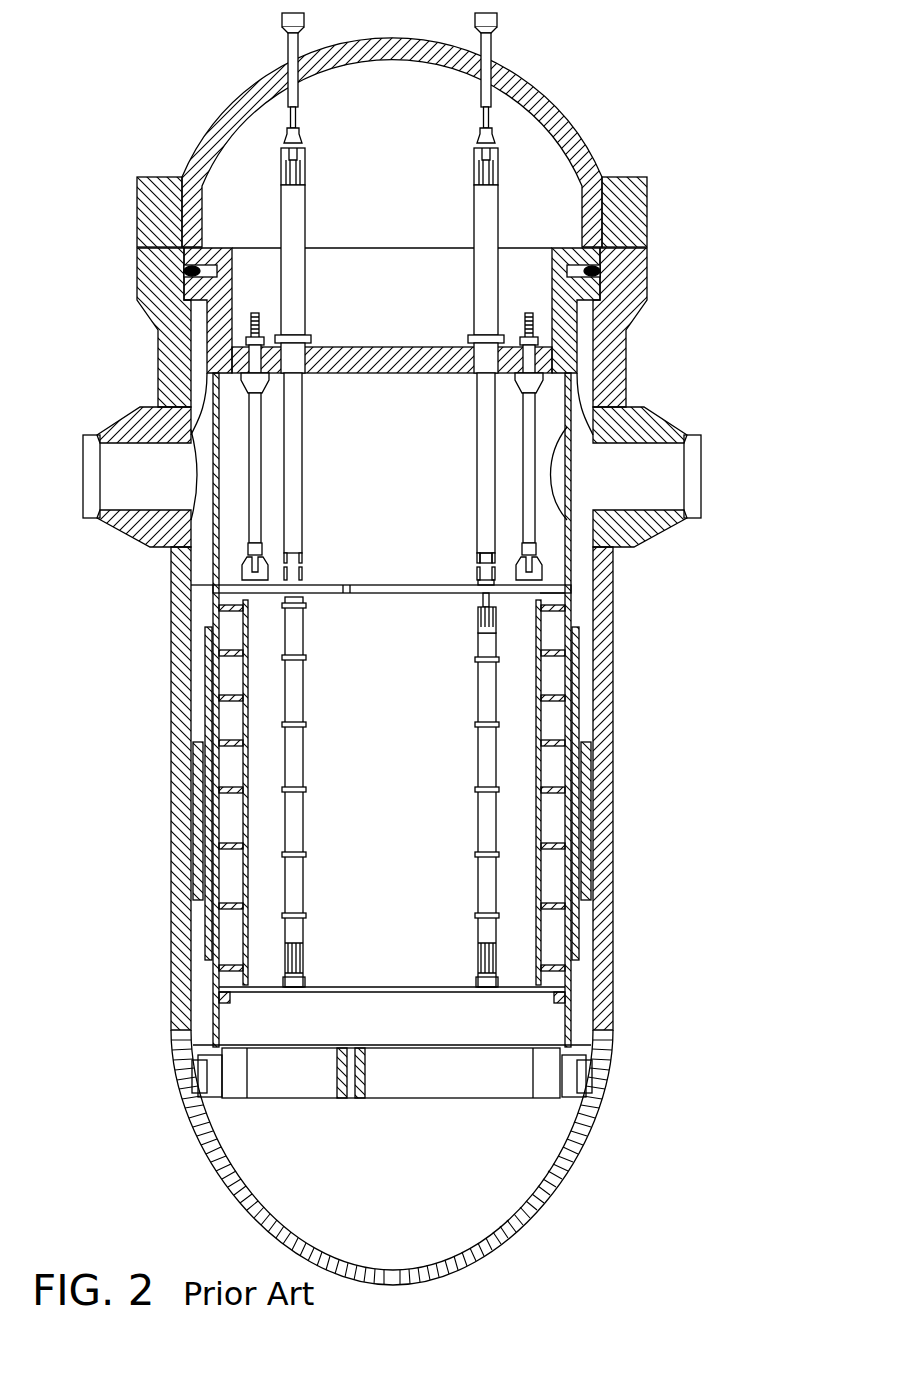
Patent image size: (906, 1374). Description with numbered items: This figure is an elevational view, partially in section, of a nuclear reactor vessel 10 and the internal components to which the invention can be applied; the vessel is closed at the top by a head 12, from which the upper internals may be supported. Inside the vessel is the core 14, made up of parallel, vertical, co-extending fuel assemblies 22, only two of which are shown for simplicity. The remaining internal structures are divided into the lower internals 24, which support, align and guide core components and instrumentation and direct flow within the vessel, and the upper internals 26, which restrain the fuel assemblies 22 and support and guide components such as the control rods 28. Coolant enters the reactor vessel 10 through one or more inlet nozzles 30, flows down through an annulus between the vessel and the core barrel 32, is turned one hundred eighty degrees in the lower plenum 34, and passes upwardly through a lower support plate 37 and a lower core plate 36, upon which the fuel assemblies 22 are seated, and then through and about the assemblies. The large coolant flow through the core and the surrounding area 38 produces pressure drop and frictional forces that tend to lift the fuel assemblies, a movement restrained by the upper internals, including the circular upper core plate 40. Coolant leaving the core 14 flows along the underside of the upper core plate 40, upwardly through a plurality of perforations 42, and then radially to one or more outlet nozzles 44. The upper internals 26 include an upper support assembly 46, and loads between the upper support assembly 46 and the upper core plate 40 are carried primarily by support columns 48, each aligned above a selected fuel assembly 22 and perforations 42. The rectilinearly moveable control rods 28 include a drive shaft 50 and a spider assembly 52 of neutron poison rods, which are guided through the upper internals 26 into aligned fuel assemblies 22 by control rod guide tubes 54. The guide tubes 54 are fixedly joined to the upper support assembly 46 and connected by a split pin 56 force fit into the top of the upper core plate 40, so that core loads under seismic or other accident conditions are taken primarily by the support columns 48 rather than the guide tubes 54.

The reactor vessel 10 is at (613, 663).
The closure head 12 is at (640, 212).
The core 14 is at (377, 784).
The fuel assemblies 22 is at (307, 690).
The lower internals 24 is at (377, 1034).
The upper internals 26 is at (379, 454).
The control rods 28 is at (473, 562).
The inlet nozzles 30 is at (120, 410).
The core barrel 32 is at (191, 585).
The lower plenum 34 is at (556, 1153).
The lower core plate 36 is at (455, 985).
The lower support plate 37 is at (432, 1087).
The surrounding area 38 is at (447, 762).
The upper core plate 40 is at (435, 593).
The perforations 42 is at (350, 582).
The outlet nozzles 44 is at (640, 410).
The upper support assembly 46 is at (560, 250).
The support columns 48 is at (520, 425).
The drive shaft 50 is at (497, 560).
The spider assembly 52 is at (490, 590).
The control rod guide tubes 54 is at (305, 410).
The split pin 56 is at (500, 603).